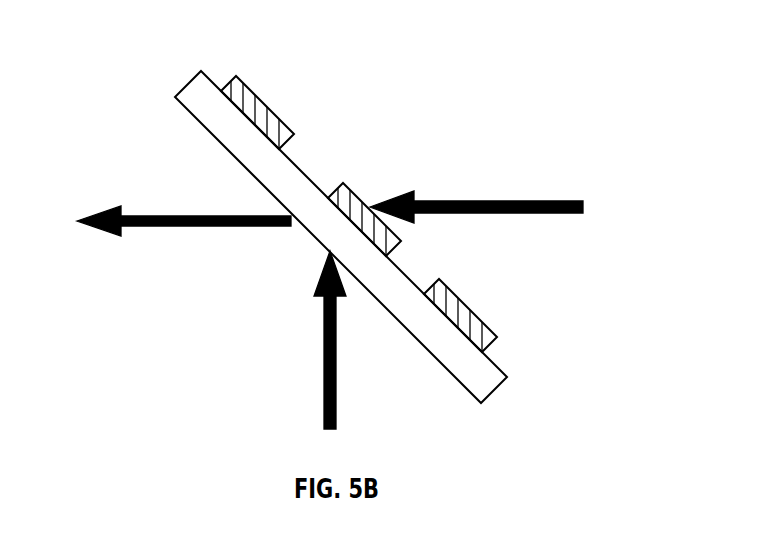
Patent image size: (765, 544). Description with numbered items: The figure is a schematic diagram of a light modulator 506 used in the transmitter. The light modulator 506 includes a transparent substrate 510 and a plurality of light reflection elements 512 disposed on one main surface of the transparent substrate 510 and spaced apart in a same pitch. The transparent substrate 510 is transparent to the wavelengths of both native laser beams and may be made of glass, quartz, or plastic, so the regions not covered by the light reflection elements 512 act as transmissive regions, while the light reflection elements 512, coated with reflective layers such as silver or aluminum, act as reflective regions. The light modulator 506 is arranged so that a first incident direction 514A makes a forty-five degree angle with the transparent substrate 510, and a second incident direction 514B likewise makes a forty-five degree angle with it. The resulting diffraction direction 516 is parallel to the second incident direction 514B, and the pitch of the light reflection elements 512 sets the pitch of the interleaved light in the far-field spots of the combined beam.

The light modulator 506 is at (380, 36).
The transparent substrate 510 is at (498, 386).
The light reflection elements 512 is at (293, 133).
The first incident direction 514A is at (355, 340).
The second incident direction 514B is at (476, 198).
The diffraction direction 516 is at (184, 211).